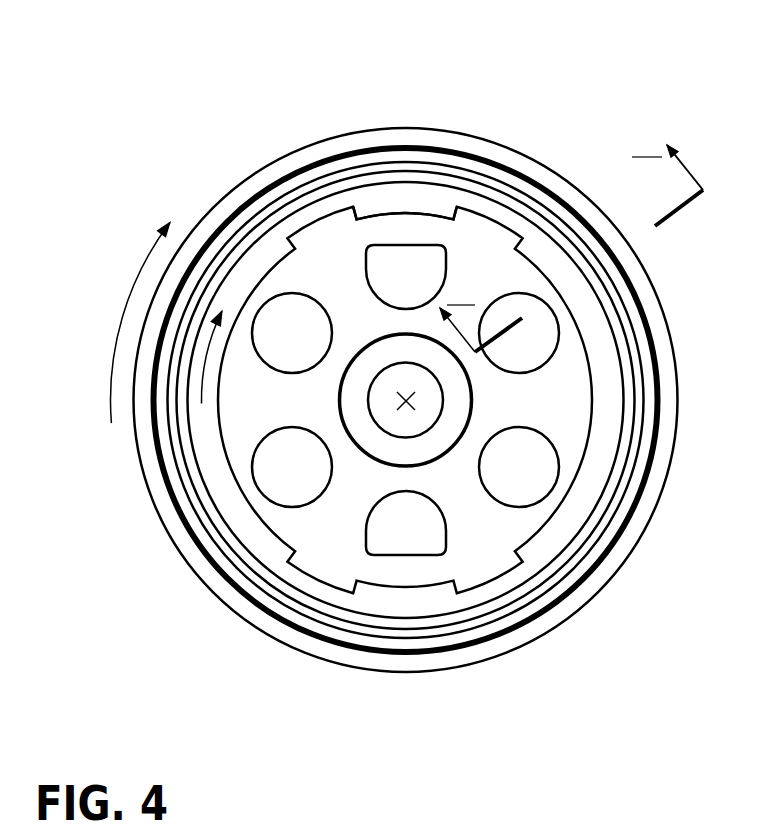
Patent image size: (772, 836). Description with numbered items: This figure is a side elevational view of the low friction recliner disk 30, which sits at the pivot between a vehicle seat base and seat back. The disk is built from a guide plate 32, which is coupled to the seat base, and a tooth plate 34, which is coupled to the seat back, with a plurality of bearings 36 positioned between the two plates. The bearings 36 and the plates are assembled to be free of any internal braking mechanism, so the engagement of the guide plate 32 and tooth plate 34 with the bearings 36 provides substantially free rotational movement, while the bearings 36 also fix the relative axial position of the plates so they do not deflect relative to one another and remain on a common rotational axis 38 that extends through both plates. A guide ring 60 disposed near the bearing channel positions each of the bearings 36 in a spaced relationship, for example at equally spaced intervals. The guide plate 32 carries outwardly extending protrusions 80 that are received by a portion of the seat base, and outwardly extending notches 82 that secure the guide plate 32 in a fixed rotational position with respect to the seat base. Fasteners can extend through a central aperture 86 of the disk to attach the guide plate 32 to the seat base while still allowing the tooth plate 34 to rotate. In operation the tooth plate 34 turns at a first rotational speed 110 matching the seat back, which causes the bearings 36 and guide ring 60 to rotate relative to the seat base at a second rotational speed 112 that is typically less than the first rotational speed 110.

The low friction recliner disk 30 is at (345, 92).
The guide plate 32 is at (600, 597).
The tooth plate 34 is at (405, 592).
The bearings 36 is at (473, 150).
The common rotational axis 38 is at (412, 404).
The guide ring 60 is at (188, 538).
The outwardly extending protrusions 80 is at (273, 293).
The outwardly extending notches 82 is at (350, 212).
The central aperture 86 is at (380, 426).
The first rotational speed 110 is at (123, 317).
The second rotational speed 112 is at (198, 400).